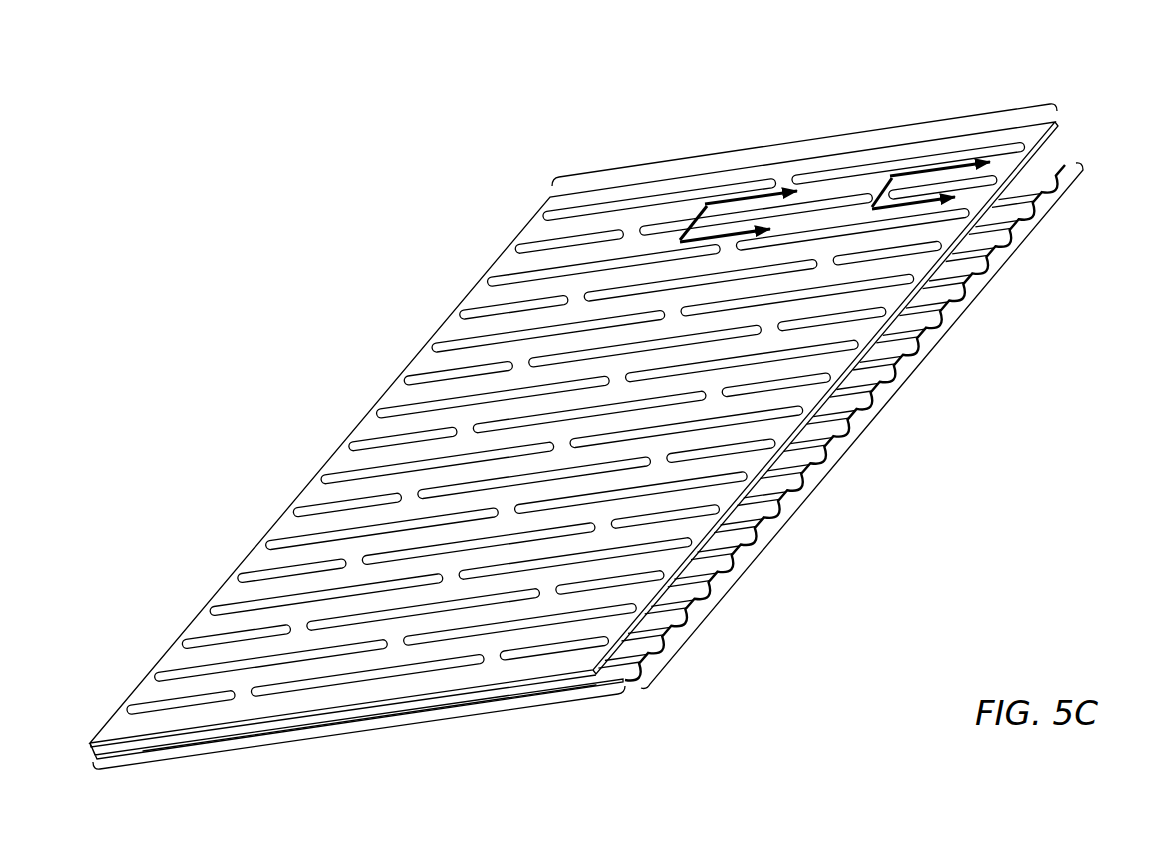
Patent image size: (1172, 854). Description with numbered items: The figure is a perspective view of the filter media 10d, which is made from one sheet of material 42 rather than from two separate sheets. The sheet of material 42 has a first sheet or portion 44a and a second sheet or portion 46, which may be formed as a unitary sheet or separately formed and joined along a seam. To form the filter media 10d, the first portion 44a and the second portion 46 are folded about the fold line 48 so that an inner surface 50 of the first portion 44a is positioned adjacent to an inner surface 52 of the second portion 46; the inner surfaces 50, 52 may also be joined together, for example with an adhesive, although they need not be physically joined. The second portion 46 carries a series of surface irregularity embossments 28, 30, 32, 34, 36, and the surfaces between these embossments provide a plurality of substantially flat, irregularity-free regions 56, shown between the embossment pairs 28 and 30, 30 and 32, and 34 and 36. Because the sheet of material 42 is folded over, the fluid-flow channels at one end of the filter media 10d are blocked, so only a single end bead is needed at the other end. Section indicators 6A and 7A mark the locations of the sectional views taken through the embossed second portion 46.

The filter media 10d is at (590, 414).
The surface irregularity embossment 28 is at (147, 703).
The surface irregularity embossment 30 is at (297, 687).
The surface irregularity embossment 32 is at (540, 652).
The surface irregularity embossment 34 is at (180, 675).
The surface irregularity embossment 36 is at (443, 637).
The irregularity-free regions 56 is at (495, 657).
The sheet of material 42 is at (880, 411).
The first sheet or portion 44a is at (359, 727).
The second sheet or portion 46 is at (804, 145).
The fold line 48 is at (90, 751).
The inner surface of the first portion 50 is at (1069, 156).
The inner surface of the second portion 52 is at (598, 404).
The section line 6A- 6A is at (722, 221).
The section line 7A- 7A is at (913, 193).